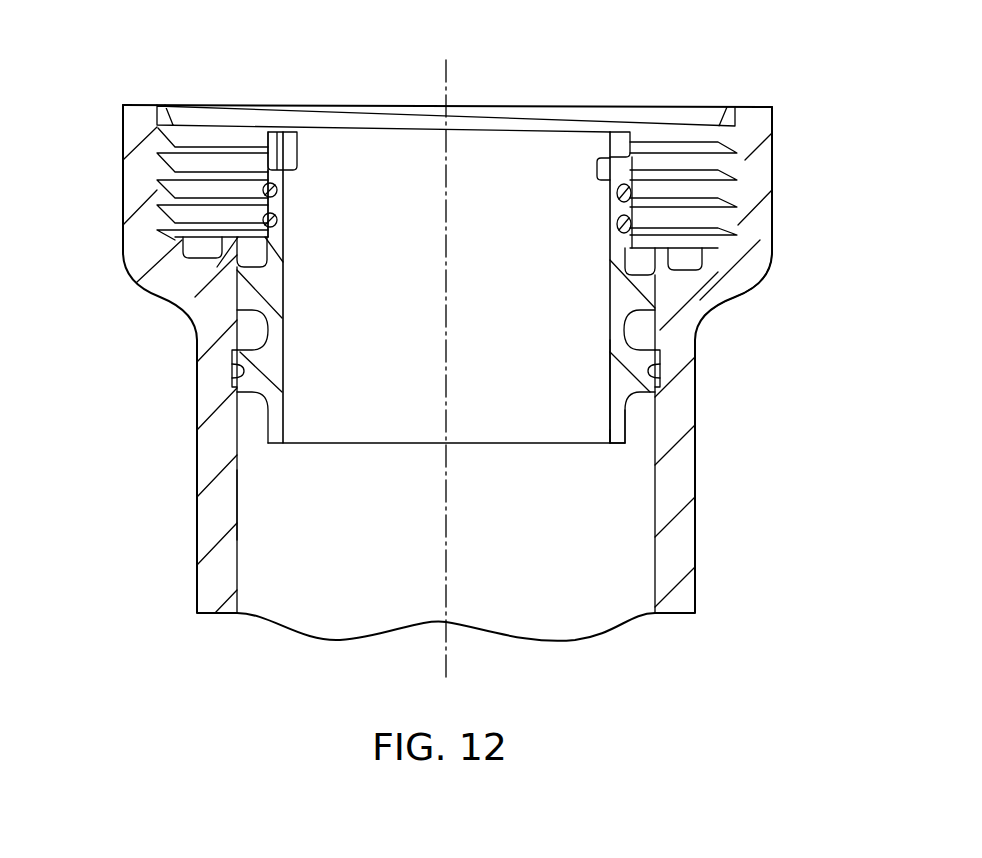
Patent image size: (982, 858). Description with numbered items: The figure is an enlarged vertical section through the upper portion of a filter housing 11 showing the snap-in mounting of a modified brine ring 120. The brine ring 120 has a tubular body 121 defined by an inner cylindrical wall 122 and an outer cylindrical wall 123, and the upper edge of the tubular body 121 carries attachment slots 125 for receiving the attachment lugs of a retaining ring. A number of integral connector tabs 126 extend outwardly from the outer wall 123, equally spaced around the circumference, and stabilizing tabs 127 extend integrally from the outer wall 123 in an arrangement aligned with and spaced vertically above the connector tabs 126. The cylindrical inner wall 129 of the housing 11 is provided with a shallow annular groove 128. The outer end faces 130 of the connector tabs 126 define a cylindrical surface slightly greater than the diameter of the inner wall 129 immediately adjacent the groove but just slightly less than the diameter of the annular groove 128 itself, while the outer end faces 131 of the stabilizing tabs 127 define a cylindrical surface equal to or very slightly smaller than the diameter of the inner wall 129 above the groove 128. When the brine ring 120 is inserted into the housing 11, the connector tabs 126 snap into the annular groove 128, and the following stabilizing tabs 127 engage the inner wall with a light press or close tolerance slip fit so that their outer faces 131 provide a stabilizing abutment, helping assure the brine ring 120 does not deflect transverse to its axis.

The housing 11 is at (197, 513).
The modified brine ring 120 is at (362, 446).
The tubular body 121 is at (618, 430).
The inner cylindrical wall 122 is at (608, 367).
The outer cylindrical wall 123 is at (268, 425).
The attachment slots 125 is at (290, 149).
The connector tabs 126 is at (648, 403).
The stabilizing tabs 127 is at (635, 300).
The annular groove 128 is at (230, 385).
The cylindrical inner wall 129 is at (237, 503).
The outer end faces 130 is at (232, 355).
The outer end faces 131 is at (710, 290).